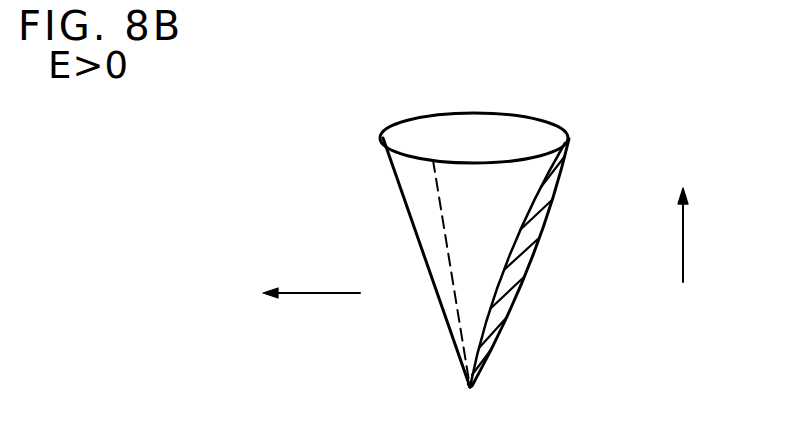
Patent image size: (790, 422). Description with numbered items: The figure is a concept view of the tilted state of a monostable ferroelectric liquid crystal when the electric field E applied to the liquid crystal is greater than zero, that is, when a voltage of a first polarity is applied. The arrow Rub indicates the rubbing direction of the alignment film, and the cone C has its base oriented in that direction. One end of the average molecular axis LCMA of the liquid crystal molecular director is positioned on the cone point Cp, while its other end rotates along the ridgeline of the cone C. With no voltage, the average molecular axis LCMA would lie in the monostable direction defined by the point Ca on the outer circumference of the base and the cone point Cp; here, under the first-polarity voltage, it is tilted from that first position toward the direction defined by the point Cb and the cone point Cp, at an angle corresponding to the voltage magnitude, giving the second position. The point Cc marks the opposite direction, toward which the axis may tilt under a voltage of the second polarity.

The cone C is at (498, 113).
The point on the outer circumference of the base of the cone Cc is at (383, 138).
The point on the outer circumference of the base of the cone Ca is at (433, 160).
The point on the outer circumference of the base of the cone Cb is at (569, 138).
The cone point Cp is at (470, 387).
The average molecular axis LCMA is at (497, 340).
The electric field E is at (311, 276).
The rubbing direction Rub is at (722, 235).